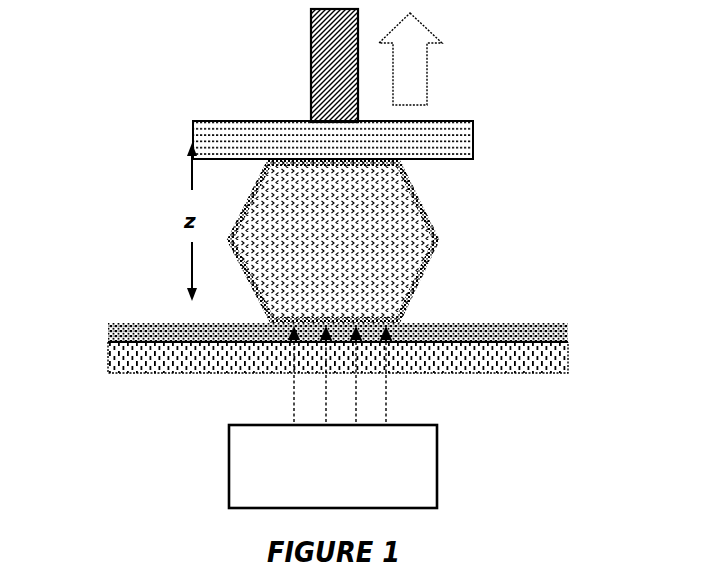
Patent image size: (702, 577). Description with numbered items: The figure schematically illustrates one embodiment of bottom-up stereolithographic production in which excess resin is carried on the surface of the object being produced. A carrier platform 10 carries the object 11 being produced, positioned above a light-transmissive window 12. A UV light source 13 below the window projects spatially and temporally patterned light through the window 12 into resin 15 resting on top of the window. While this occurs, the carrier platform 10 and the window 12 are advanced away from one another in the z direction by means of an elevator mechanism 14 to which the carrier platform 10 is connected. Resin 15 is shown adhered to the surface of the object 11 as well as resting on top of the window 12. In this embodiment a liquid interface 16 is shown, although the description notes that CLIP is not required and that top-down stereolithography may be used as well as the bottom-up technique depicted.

The carrier platform 10 is at (220, 135).
The object 11 is at (333, 241).
The light-transmissive window 12 is at (338, 357).
The UV light source 13 is at (333, 466).
The elevator mechanism 14 is at (335, 62).
The resin 15 is at (433, 223).
The liquid interface 16 is at (357, 327).